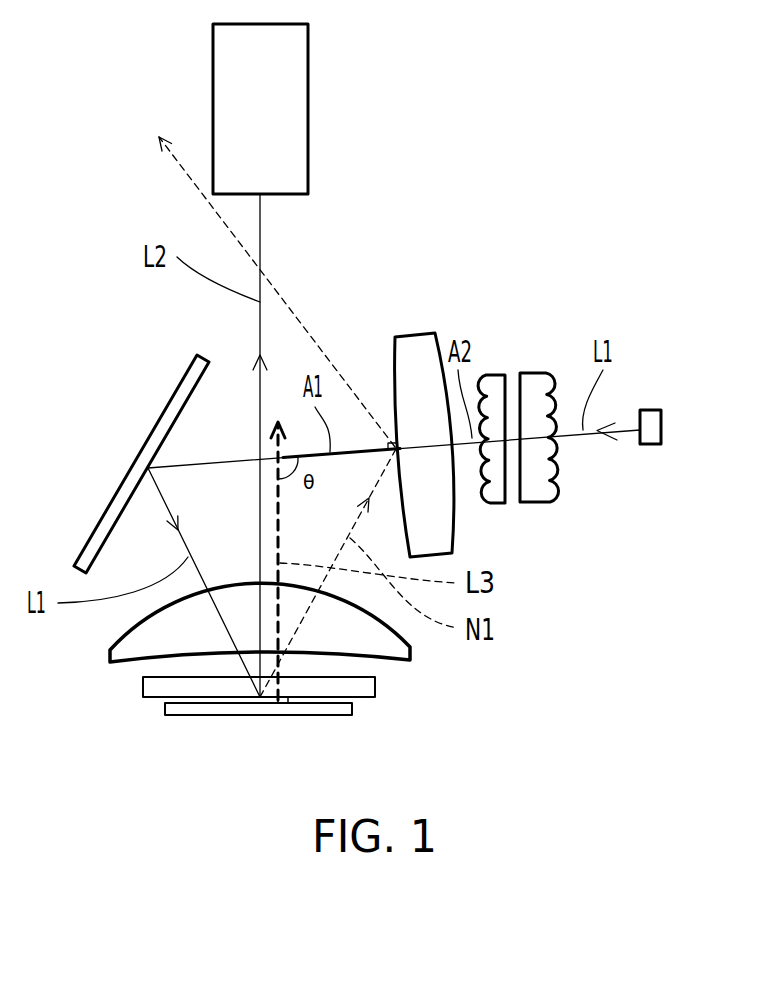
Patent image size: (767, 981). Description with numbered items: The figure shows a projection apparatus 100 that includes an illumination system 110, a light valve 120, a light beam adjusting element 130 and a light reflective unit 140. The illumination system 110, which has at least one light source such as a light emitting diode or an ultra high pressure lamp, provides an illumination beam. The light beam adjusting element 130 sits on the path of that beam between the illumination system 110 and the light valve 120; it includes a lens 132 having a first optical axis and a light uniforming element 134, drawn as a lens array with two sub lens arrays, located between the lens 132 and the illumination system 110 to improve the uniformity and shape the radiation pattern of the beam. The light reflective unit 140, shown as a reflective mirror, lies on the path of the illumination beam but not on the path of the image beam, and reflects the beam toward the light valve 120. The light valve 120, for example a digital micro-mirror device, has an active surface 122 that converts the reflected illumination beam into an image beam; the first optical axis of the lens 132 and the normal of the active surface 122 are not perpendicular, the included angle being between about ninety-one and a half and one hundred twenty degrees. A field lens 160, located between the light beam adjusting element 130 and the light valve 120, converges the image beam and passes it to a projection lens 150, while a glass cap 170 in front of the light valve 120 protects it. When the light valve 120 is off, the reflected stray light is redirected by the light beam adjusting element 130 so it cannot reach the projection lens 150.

The projection apparatus 100 is at (602, 663).
The illumination system 110 is at (648, 410).
The light valve 120 is at (178, 711).
The active surface 122 is at (195, 692).
The light beam adjusting element 130 is at (570, 231).
The lens 132 is at (413, 335).
The light uniforming element 134 is at (533, 373).
The light reflective unit 140 is at (170, 405).
The projection lens 150 is at (213, 113).
The field lens 160 is at (320, 643).
The glass cap 170 is at (365, 688).